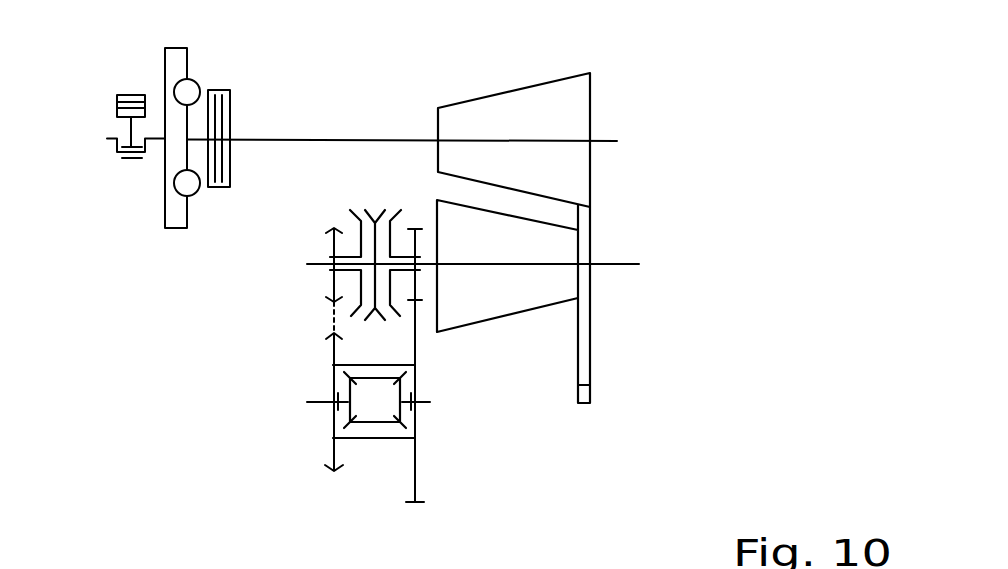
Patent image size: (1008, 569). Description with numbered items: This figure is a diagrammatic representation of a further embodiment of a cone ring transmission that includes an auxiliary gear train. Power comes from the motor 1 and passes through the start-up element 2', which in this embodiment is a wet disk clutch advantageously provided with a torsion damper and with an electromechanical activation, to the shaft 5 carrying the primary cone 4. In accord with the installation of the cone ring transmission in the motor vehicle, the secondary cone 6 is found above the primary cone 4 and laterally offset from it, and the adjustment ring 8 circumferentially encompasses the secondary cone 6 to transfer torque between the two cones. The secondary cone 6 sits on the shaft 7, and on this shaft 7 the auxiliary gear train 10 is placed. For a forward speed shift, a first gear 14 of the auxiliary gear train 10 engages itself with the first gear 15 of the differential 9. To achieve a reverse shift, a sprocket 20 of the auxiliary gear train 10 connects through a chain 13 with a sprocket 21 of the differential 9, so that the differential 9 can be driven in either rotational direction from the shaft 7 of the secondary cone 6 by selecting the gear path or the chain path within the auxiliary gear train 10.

The motor 1 is at (126, 93).
The start-up element 2' is at (210, 93).
The primary cone 4 is at (573, 75).
The shaft 5 is at (603, 142).
The secondary cone 6 is at (455, 332).
The shaft 7 is at (607, 263).
The adjustment ring 8 is at (590, 393).
The differential 9 is at (382, 438).
The auxiliary gear train 10 is at (366, 210).
The chain 13 is at (333, 318).
The gear 14 is at (418, 228).
The gear 15 is at (415, 352).
The sprocket for chain 20 is at (333, 242).
The sprocket for chain 21 is at (333, 455).